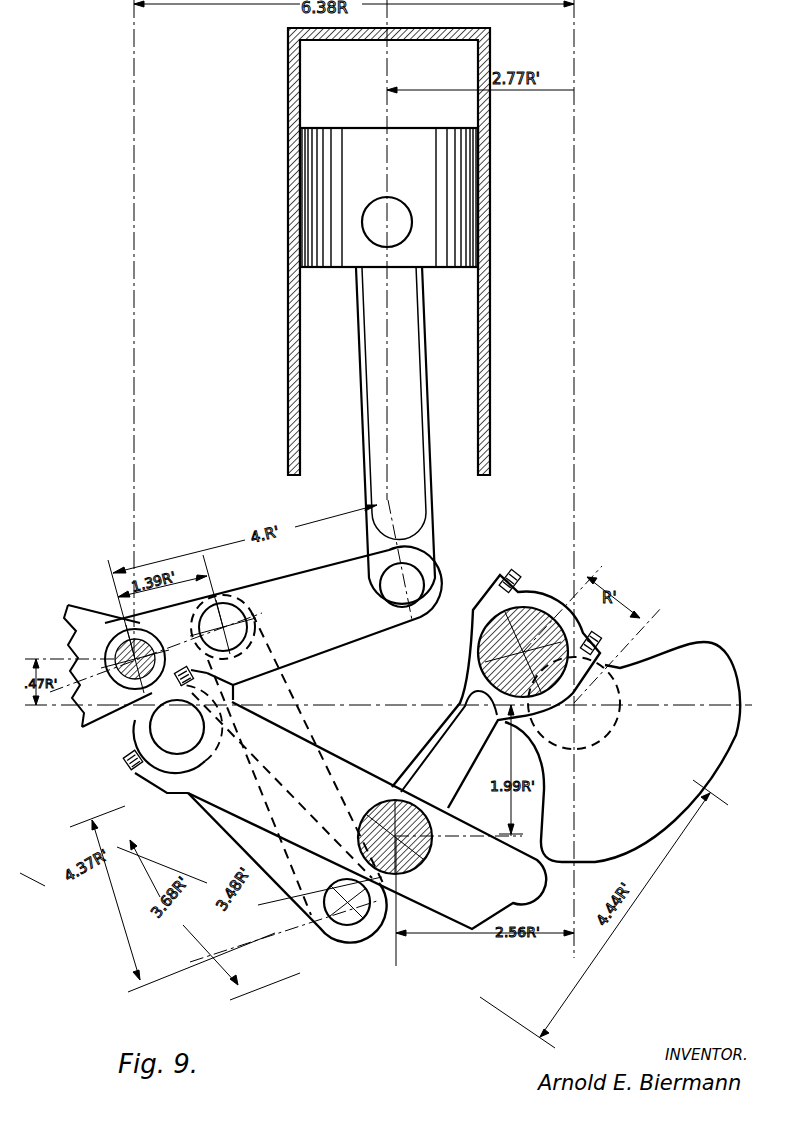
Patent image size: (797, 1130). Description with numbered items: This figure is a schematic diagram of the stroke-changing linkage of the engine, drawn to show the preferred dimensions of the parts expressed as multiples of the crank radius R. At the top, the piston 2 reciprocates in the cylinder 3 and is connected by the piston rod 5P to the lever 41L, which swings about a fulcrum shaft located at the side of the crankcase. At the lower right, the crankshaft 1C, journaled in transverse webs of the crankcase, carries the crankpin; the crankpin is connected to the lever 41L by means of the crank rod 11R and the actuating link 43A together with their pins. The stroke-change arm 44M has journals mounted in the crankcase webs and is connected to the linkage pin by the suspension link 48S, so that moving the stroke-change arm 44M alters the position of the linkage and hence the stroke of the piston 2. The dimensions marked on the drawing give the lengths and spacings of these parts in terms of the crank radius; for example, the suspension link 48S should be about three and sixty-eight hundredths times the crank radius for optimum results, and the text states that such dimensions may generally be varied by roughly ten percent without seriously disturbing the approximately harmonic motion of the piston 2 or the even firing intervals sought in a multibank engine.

The piston 2 is at (475, 168).
The cylinder 3 is at (490, 322).
The piston rod 5P is at (425, 505).
The lever 41L is at (357, 634).
The actuating link 43A is at (278, 689).
The stroke-change arm 44M is at (336, 768).
The suspension link 48S is at (216, 817).
The crank rod 11R is at (444, 730).
The crankshaft 1C is at (618, 664).